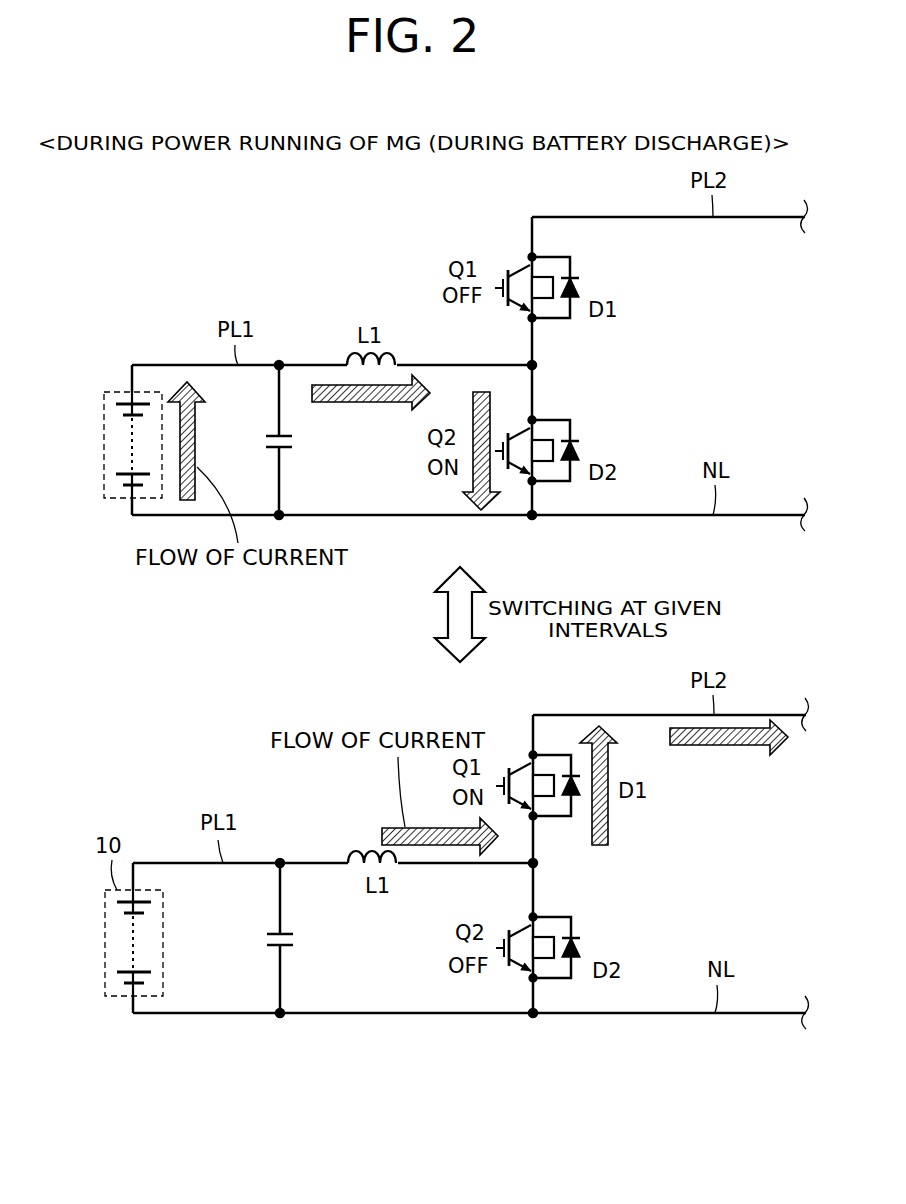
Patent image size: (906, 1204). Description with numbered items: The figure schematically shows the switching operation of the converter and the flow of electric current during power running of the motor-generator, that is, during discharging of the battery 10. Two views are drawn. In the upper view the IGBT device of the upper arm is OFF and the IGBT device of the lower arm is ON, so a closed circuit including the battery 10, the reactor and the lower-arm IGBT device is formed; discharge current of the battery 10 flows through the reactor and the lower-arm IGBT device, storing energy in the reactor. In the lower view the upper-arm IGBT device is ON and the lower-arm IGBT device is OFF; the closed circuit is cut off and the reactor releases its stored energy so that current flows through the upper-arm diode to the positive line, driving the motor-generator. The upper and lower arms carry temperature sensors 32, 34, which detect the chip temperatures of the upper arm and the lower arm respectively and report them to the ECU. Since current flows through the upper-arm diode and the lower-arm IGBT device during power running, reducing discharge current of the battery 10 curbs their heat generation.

The battery 10 is at (115, 392).
The temperature sensor 32 is at (542, 277).
The temperature sensor 34 is at (542, 442).